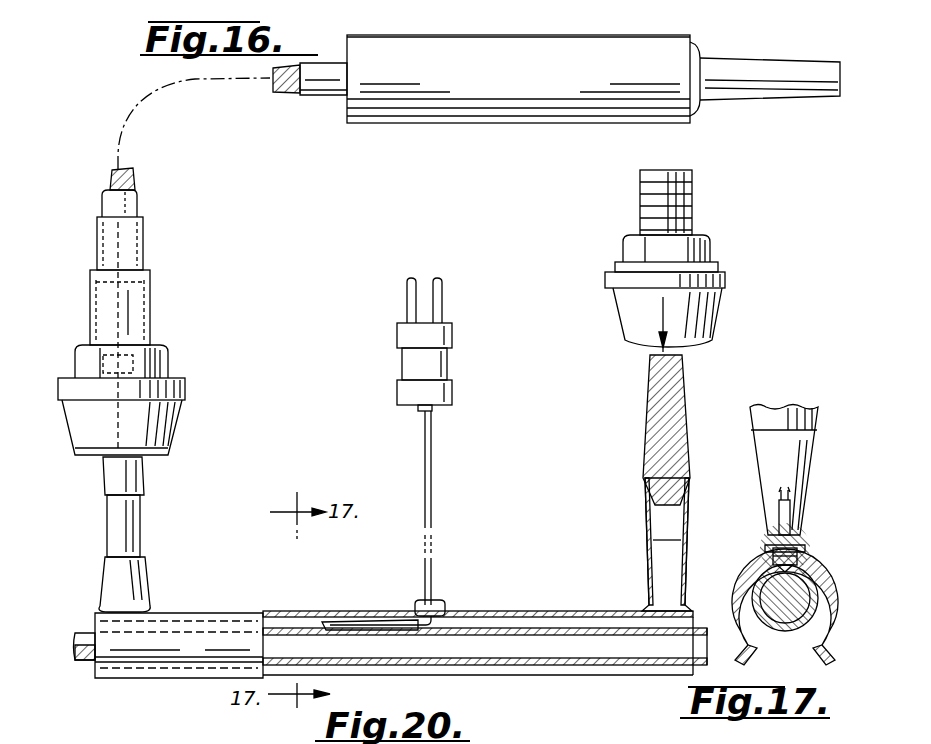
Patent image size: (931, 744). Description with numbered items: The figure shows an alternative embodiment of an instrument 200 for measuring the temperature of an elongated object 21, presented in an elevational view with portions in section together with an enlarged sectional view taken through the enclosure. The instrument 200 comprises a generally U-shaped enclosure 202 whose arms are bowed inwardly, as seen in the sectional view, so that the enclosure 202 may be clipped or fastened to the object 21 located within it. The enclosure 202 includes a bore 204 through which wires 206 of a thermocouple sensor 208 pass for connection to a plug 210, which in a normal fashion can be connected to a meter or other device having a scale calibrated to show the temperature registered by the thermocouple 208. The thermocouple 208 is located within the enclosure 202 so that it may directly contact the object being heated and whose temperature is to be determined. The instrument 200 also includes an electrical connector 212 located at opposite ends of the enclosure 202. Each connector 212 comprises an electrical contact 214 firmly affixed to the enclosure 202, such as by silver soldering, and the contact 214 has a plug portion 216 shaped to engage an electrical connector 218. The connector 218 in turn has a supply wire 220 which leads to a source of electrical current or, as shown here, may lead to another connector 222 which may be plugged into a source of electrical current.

In FIG. 16, the instrument 200 is at (323, 286).
In FIG. 16, the enclosure 202 is at (535, 610).
In FIG. 17, the enclosure 202 is at (740, 565).
In FIG. 16, the bore 204 is at (436, 620).
In FIG. 16, the wires 206 is at (433, 568).
In FIG. 17, the wires 206 is at (780, 512).
In FIG. 16, the thermocouple sensor 208 is at (358, 630).
In FIG. 17, the thermocouple sensor 208 is at (784, 584).
In FIG. 16, the plug 210 is at (446, 358).
In FIG. 16, the electrical connector 212 is at (200, 444).
In FIG. 16, the electrical contact 214 is at (145, 535).
In FIG. 17, the electrical contact 214 is at (783, 425).
In FIG. 16, the plug portion 216 is at (146, 470).
In FIG. 16, the electrical connector 218 is at (188, 405).
In FIG. 16, the supply wire 220 is at (318, 93).
In FIG. 16, the connector 222 is at (498, 110).
In FIG. 16, the elongated object 21 is at (565, 627).
In FIG. 17, the elongated object 21 is at (796, 592).